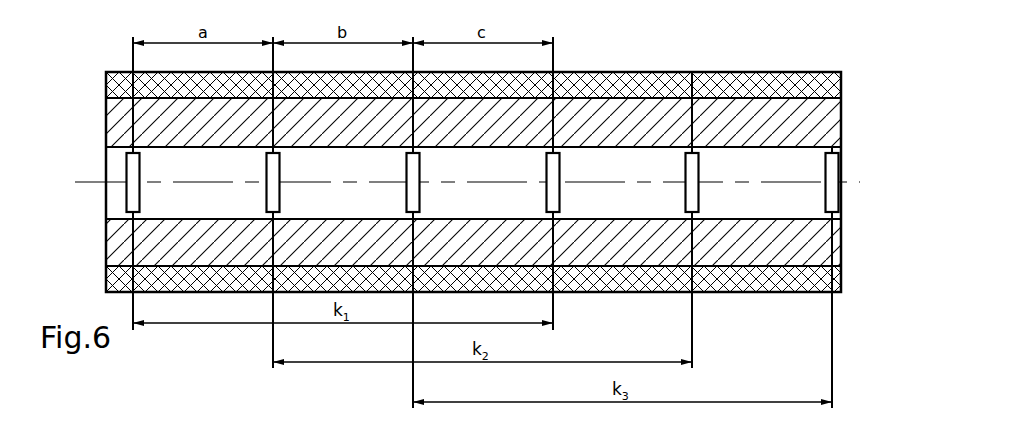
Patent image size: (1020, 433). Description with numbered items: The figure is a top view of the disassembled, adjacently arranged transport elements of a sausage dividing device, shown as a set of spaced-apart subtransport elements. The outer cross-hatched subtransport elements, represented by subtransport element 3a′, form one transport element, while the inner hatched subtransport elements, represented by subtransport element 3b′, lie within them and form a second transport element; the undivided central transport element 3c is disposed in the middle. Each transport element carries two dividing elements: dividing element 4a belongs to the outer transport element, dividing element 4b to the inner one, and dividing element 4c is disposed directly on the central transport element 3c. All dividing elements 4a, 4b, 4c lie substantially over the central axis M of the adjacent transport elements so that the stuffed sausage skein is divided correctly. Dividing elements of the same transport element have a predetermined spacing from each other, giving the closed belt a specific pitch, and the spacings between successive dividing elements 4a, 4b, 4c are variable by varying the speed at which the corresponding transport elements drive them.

The subtransport element 3a′ is at (106, 278).
The subtransport element 3b′ is at (833, 237).
The transport element 3c is at (112, 212).
The dividing element 4a is at (140, 163).
The dividing element 4b is at (280, 163).
The dividing element 4c is at (420, 163).
The central axis M is at (458, 184).